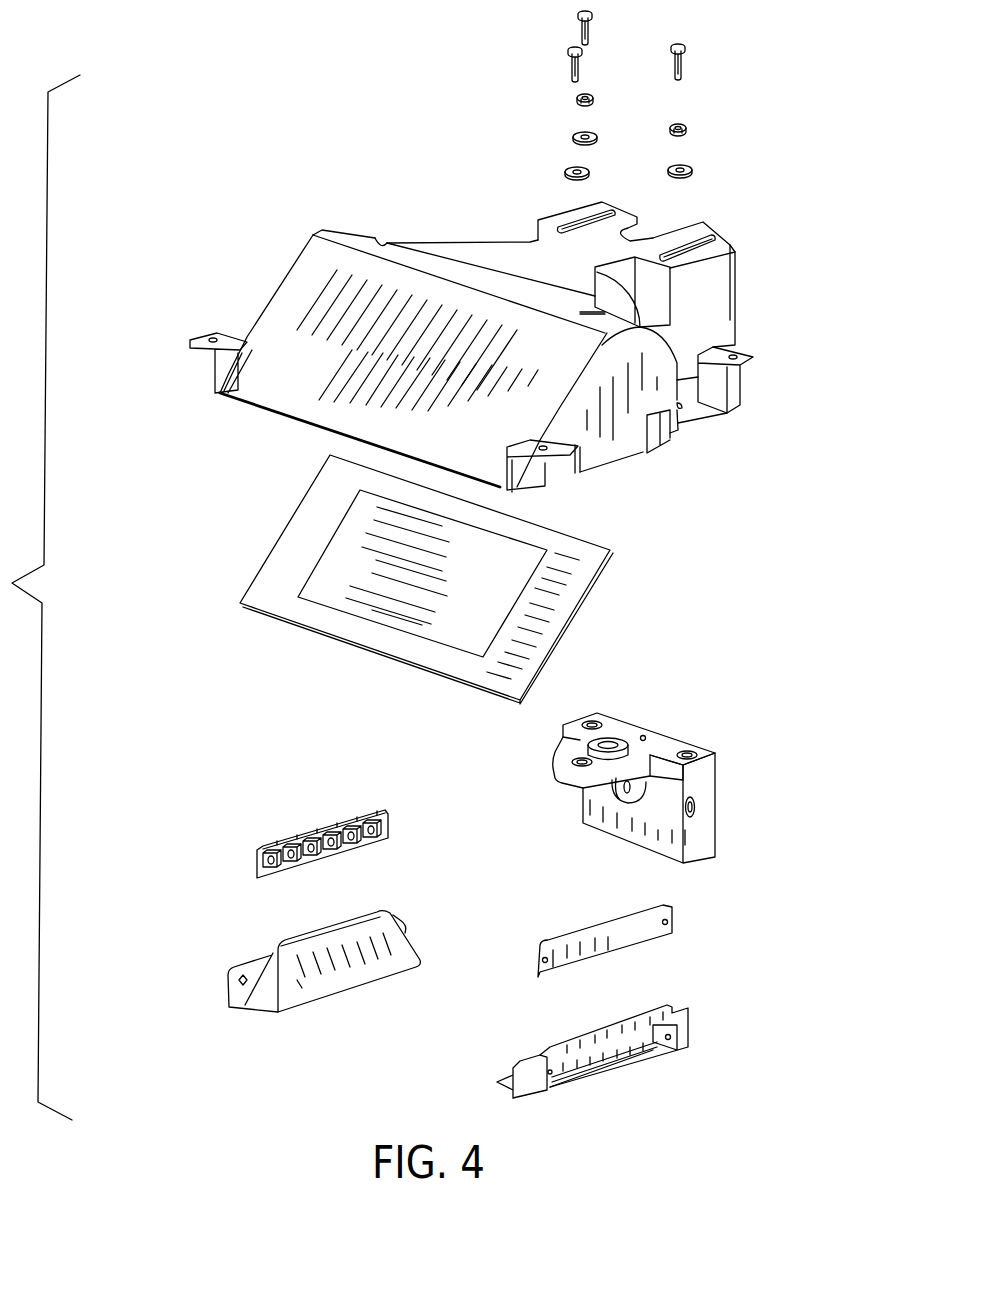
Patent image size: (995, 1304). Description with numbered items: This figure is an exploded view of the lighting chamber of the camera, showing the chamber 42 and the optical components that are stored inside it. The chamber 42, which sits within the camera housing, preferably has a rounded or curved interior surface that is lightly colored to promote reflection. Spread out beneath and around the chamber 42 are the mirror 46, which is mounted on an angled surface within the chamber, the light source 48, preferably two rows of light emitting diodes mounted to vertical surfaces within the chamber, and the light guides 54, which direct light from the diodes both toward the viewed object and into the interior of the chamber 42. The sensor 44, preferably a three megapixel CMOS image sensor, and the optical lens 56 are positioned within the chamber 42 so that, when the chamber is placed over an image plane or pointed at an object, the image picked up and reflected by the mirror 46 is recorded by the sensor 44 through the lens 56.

The chamber 42 is at (627, 417).
The sensor 44 is at (710, 783).
The mirror 46 is at (283, 552).
The light source 48 is at (258, 862).
The light guides 54 is at (263, 997).
The optical lens 56 is at (623, 800).